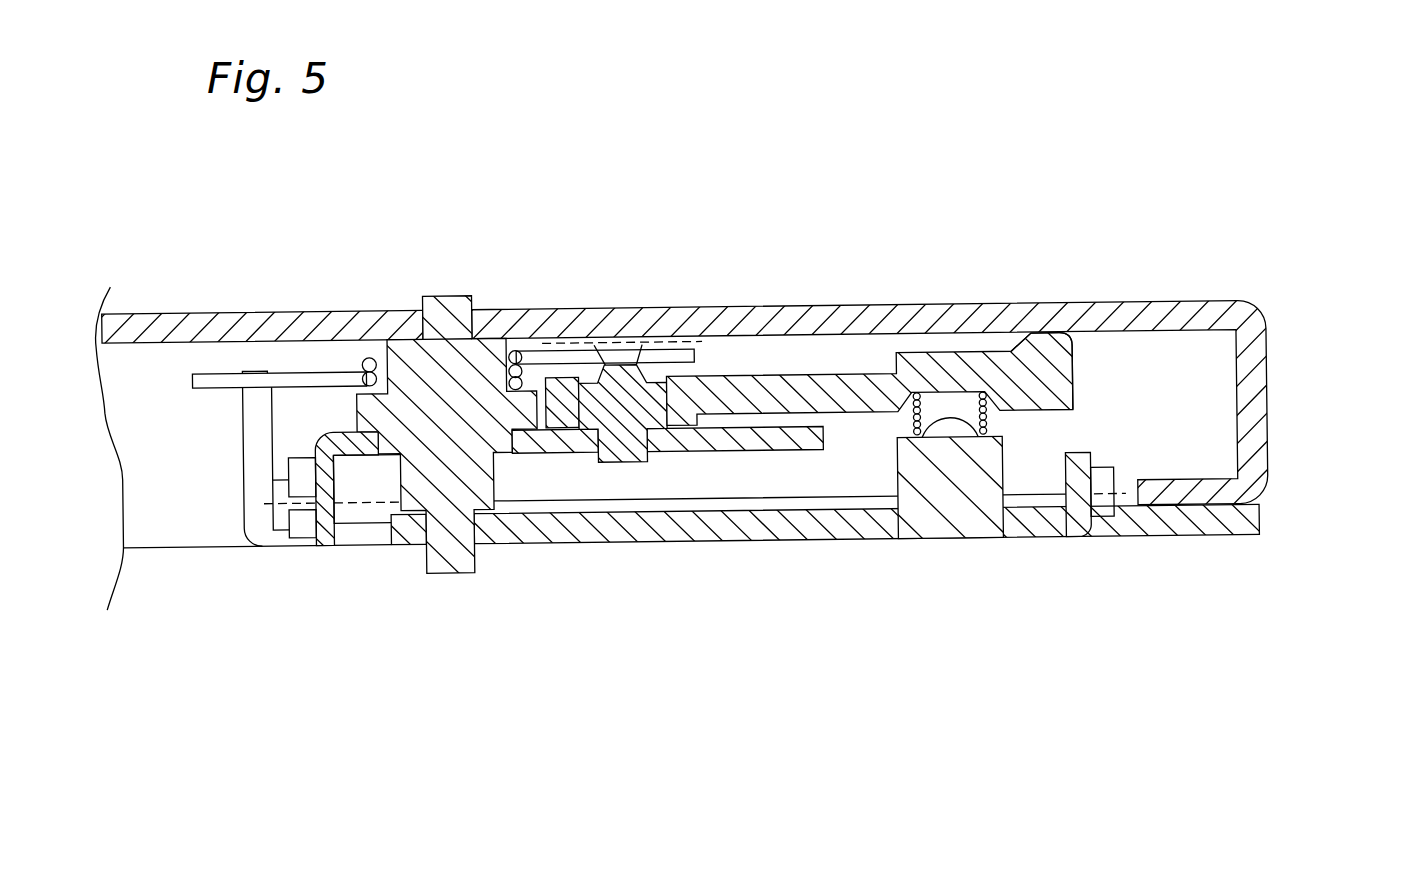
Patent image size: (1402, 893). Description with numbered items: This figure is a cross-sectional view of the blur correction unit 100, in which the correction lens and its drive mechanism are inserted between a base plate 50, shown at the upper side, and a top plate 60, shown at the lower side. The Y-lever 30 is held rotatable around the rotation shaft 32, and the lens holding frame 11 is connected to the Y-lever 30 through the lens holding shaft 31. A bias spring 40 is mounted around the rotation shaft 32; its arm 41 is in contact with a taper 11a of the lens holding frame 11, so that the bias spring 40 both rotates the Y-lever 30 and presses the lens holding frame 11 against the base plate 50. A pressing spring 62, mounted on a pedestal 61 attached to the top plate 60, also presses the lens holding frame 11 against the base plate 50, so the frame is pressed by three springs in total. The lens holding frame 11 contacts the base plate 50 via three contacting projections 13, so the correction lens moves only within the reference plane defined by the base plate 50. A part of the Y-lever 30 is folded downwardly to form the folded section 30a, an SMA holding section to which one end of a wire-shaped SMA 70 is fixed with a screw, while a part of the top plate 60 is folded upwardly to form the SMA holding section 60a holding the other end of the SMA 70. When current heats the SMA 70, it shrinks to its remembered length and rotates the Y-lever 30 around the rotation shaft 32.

The blur correction unit 100 is at (1235, 274).
The base plate 50 is at (950, 315).
The top plate 60 is at (835, 530).
The SMA holding section 60a is at (1083, 468).
The pedestal 61 is at (963, 515).
The pressing spring 62 is at (985, 417).
The wire-shaped SMA 70 is at (533, 501).
The rotation shaft 32 is at (450, 332).
The Y-lever 30 is at (697, 440).
The folded section 30a is at (335, 509).
The lens holding shaft 31 is at (620, 442).
The bias spring 40 is at (316, 373).
The arm 41 is at (562, 351).
The lens holding frame 11 is at (1055, 377).
The taper 11a is at (648, 344).
The contacting projections 13 is at (1052, 344).